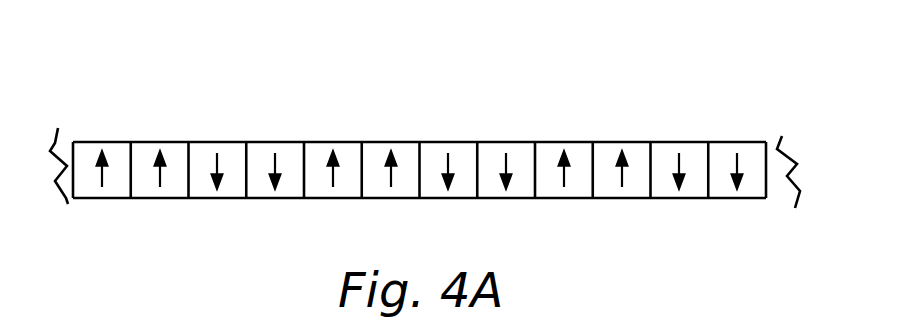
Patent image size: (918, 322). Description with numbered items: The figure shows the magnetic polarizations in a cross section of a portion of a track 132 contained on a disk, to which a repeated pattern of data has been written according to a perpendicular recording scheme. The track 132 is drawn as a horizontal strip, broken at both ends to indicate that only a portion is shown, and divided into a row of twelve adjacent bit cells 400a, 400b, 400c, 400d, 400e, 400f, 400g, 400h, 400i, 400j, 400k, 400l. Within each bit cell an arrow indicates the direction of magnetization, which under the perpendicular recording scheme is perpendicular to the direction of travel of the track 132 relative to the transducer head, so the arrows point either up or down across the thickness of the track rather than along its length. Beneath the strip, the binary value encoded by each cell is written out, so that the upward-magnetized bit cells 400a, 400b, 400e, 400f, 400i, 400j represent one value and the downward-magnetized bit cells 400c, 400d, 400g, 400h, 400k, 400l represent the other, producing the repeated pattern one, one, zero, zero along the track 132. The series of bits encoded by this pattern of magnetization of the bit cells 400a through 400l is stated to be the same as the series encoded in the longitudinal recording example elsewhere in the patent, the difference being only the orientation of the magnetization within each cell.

The track 132 is at (453, 127).
The bit cell 400a is at (90, 140).
The bit cell 400b is at (155, 140).
The bit cell 400c is at (213, 140).
The bit cell 400d is at (278, 140).
The bit cell 400e is at (330, 140).
The bit cell 400f is at (390, 140).
The bit cell 400g is at (438, 140).
The bit cell 400h is at (498, 140).
The bit cell 400i is at (553, 140).
The bit cell 400j is at (608, 140).
The bit cell 400k is at (672, 140).
The bit cell 400l is at (733, 140).